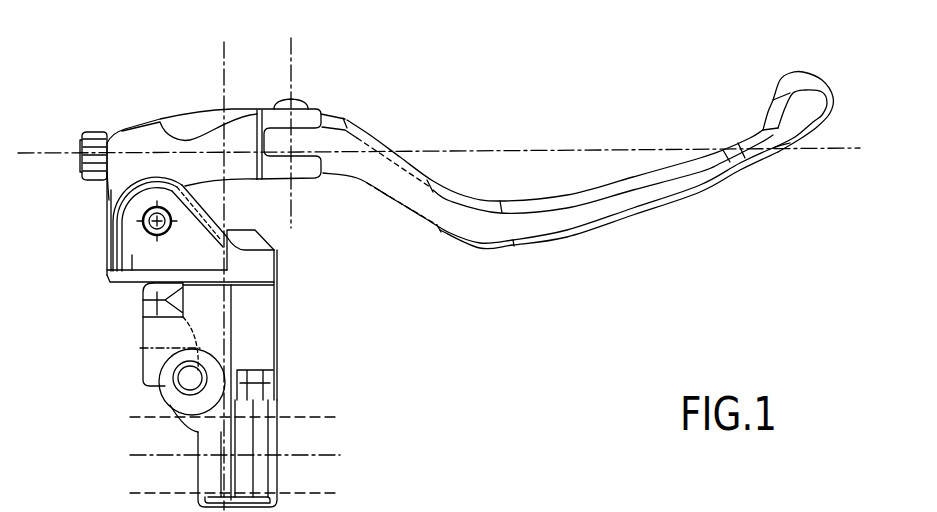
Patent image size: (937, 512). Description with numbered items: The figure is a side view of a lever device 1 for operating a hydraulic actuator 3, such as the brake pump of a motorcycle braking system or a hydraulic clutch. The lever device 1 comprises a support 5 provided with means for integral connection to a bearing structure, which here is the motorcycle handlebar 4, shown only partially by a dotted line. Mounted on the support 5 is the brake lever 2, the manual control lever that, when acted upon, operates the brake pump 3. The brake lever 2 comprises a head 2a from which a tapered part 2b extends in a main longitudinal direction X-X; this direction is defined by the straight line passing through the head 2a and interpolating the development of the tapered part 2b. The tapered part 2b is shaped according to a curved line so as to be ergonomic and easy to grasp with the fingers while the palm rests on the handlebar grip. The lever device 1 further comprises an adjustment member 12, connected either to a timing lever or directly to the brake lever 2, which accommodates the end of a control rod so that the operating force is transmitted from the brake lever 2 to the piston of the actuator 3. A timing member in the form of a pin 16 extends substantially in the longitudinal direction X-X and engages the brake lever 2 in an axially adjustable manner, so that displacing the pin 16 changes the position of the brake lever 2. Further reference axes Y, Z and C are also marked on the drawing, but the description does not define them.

The lever device 1 is at (445, 299).
The brake lever 2 is at (368, 134).
The head 2a is at (186, 130).
The tapered part 2b is at (565, 197).
The hydraulic actuator 3 is at (253, 327).
The motorcycle handlebar 4 is at (300, 447).
The support 5 is at (140, 256).
The adjustment member 12 is at (216, 182).
The pin 16 is at (95, 130).
The main longitudinal direction X is at (18, 153).
The axis Y is at (224, 107).
The pivot axis Z is at (143, 223).
The axis C is at (293, 90).